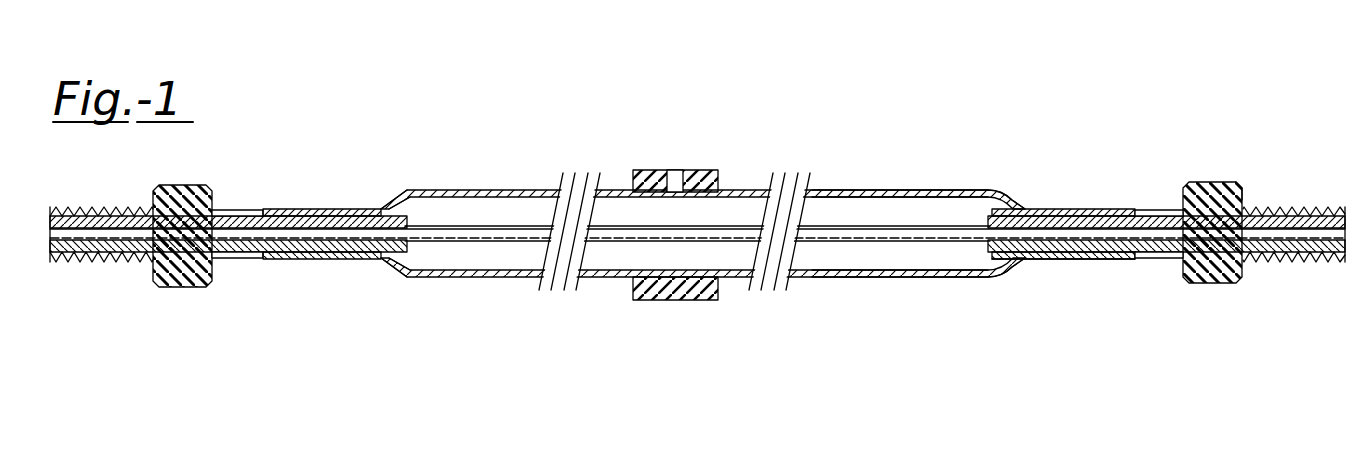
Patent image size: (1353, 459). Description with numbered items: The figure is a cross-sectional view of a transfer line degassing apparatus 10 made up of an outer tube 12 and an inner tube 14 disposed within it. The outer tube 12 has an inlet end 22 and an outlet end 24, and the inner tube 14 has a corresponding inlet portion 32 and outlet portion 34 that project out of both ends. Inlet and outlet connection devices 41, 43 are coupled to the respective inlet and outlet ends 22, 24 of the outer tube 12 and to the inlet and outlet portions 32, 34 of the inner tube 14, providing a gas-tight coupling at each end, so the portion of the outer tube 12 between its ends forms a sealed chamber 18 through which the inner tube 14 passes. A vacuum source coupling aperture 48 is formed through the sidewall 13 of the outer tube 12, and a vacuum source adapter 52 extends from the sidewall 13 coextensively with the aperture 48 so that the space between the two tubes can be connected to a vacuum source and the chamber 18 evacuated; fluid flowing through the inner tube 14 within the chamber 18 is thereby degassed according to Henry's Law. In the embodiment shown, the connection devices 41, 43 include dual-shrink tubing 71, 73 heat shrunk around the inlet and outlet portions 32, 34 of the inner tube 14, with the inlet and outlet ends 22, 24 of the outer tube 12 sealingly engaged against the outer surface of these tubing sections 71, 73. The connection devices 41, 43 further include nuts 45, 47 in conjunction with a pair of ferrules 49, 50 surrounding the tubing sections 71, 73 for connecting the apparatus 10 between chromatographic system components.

The transfer line degassing apparatus 10 is at (1003, 165).
The outer tube 12 is at (415, 190).
The sidewall 13 is at (488, 190).
The inner tube 14 is at (418, 243).
The sealed chamber 18 is at (878, 190).
The inlet end 22 is at (306, 208).
The outlet end 24 is at (1066, 208).
The inlet portion 32 is at (247, 262).
The outlet portion 34 is at (1083, 258).
The inlet connection device 41 is at (124, 278).
The outlet connection device 43 is at (1241, 180).
The nut 45 is at (163, 290).
The nut 47 is at (1213, 284).
The vacuum source coupling aperture 48 is at (677, 197).
The ferrule 49 is at (62, 262).
The ferrule 50 is at (1340, 263).
The vacuum source adapter 52 is at (633, 170).
The dual-shrink tubing 71 is at (242, 208).
The dual-shrink tubing 73 is at (1166, 210).